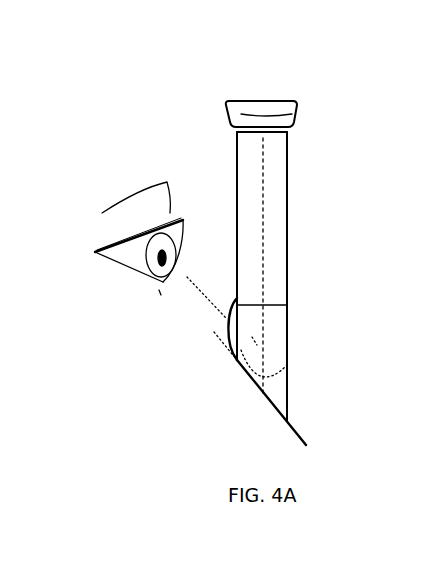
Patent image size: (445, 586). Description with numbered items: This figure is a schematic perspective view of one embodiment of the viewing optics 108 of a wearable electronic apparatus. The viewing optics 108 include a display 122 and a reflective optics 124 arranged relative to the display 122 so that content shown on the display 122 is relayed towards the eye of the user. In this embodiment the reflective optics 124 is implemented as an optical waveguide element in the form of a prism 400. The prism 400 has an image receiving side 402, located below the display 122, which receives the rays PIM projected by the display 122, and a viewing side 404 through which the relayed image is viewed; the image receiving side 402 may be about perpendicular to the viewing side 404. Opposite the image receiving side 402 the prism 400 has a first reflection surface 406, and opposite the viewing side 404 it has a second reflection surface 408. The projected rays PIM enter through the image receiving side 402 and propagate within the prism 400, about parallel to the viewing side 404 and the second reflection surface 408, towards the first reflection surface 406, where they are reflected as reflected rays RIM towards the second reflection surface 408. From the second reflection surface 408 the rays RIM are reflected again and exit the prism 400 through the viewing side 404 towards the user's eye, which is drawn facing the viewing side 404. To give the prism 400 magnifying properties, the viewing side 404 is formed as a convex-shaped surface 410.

The viewing optics 108 is at (272, 67).
The display 122 is at (238, 100).
The image receiving side 402 is at (283, 132).
The projected rays PIM is at (264, 167).
The prism 400 is at (313, 228).
The reflected rays RIM is at (215, 298).
The convex-shaped surface 410 is at (283, 305).
The viewing side 404 is at (226, 322).
The second reflection surface 408 is at (280, 370).
The first reflection surface 406 is at (257, 375).
The reflective optics 124 is at (258, 397).